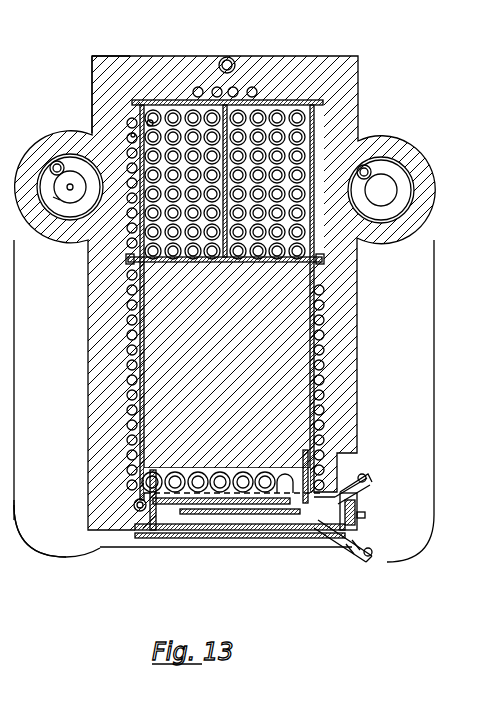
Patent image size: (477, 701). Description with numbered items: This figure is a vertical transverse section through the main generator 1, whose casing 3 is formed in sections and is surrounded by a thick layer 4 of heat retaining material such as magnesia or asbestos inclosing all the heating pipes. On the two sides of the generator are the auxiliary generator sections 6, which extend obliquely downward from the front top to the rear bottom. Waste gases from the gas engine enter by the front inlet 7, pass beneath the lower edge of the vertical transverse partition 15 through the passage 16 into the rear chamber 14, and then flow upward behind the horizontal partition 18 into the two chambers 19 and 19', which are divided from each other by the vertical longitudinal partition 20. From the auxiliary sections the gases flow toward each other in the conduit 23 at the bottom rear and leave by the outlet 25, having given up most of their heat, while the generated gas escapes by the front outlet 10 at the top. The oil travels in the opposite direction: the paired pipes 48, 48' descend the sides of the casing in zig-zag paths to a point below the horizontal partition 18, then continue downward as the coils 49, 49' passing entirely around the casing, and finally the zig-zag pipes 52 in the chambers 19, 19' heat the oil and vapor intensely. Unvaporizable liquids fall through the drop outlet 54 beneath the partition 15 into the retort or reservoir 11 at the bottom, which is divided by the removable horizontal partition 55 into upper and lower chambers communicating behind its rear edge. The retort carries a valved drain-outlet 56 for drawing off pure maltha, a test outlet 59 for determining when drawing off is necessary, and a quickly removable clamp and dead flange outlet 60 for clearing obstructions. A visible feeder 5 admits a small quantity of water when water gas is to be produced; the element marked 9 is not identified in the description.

The main generator 1 is at (358, 80).
The casing 3 is at (318, 249).
The layer of heat retaining material 4 is at (110, 68).
The visible feeder 5 is at (400, 199).
The auxiliary generator sections 6 is at (217, 401).
The front inlet 7 is at (12, 576).
The shaft 9 is at (68, 186).
The front outlet 10 is at (53, 197).
The reservoir 11 is at (207, 518).
The rear chamber 14 is at (303, 477).
The vertical transverse partition 15 is at (272, 387).
The passage 16 is at (186, 472).
The horizontal partition 18 is at (138, 279).
The chamber 19 is at (176, 141).
The chamber 19' is at (273, 142).
The vertical longitudinal partition 20 is at (225, 108).
The conduit 23 is at (248, 548).
The outlet 25 is at (12, 528).
The zig-zag oil pipe 48 is at (94, 103).
The zig-zag oil pipe 48' is at (86, 121).
The coil 49 is at (272, 302).
The coil 49' is at (356, 387).
The pipes 52 is at (148, 106).
The drop outlet 54 is at (281, 500).
The horizontal partition 55 is at (234, 515).
The valved drain-outlet 56 is at (368, 564).
The test outlet 59 is at (370, 479).
The clamp and dead flange outlet 60 is at (367, 515).